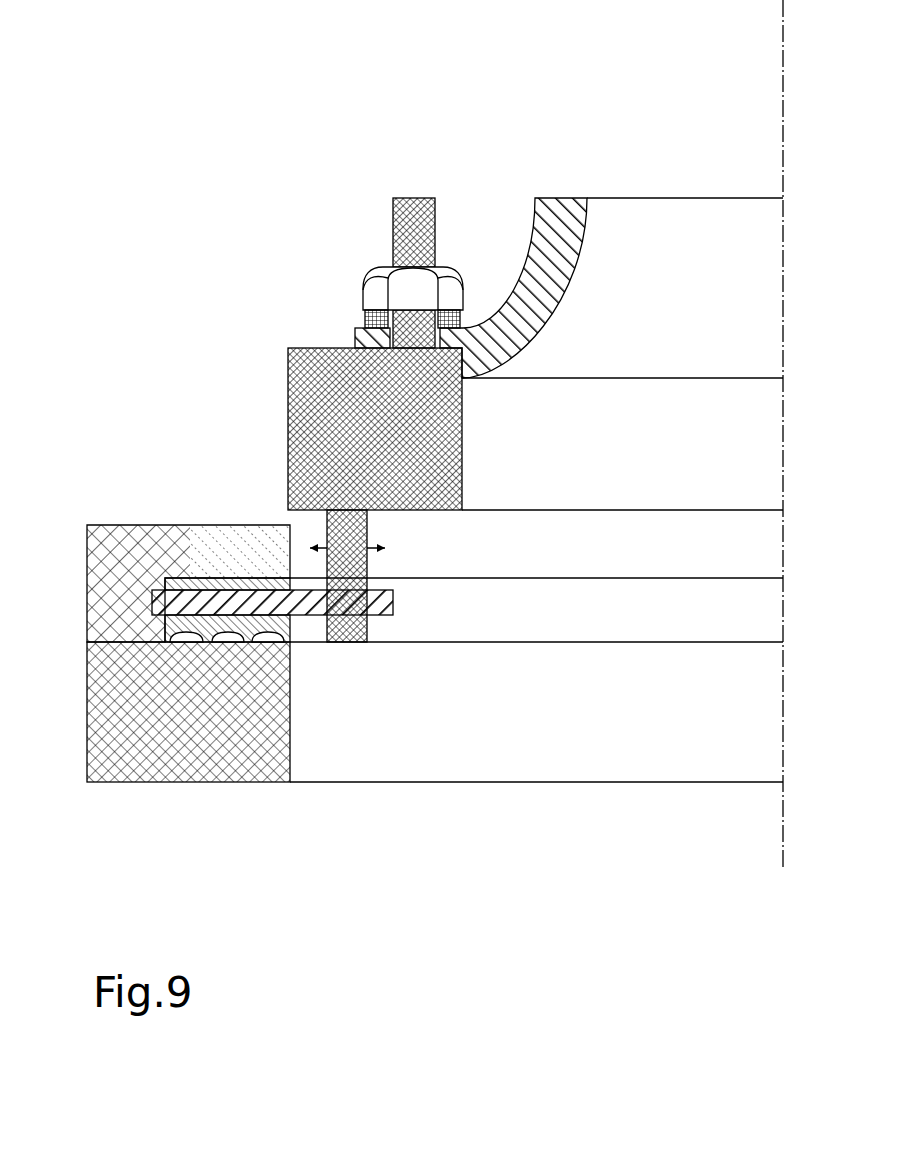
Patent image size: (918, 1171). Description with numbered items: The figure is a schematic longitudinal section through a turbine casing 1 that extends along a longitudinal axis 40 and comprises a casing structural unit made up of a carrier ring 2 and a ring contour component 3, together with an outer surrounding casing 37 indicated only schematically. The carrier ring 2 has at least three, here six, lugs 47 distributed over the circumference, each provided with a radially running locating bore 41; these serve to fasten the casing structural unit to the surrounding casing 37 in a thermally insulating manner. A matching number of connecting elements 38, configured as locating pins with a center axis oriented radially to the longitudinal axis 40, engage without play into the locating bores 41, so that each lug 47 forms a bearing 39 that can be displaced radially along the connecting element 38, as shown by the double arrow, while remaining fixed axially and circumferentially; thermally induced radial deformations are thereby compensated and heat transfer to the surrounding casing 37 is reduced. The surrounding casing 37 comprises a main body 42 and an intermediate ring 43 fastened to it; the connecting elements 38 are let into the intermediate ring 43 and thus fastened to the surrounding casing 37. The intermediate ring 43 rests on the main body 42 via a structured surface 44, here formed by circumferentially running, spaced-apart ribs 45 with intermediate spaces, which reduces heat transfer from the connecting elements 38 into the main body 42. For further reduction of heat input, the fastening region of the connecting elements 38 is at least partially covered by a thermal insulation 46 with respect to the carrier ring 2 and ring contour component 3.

The turbine casing 1 is at (301, 183).
The carrier ring 2 is at (463, 458).
The ring contour component 3 is at (535, 205).
The surrounding casing 37 is at (267, 788).
The connecting element 38 is at (393, 605).
The bearing 39 is at (375, 580).
The longitudinal axis 40 is at (783, 75).
The locating bore 41 is at (367, 627).
The main body 42 is at (190, 735).
The intermediate ring 43 is at (236, 578).
The structured surface 44 is at (267, 645).
The ribs 45 is at (188, 548).
The thermal insulation 46 is at (136, 535).
The lug 47 is at (355, 643).